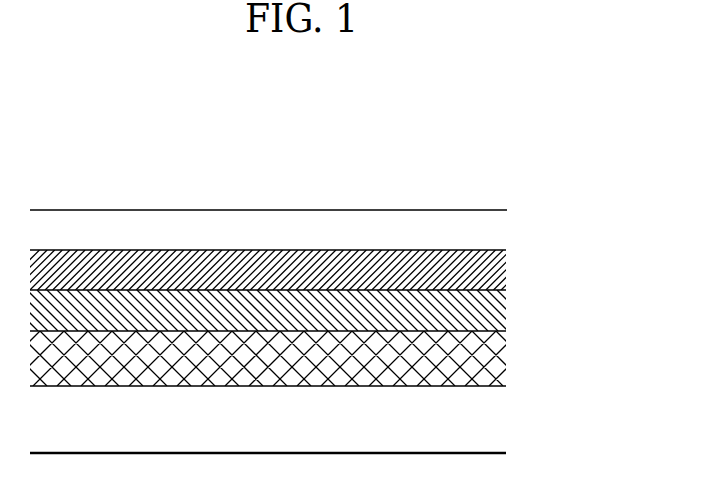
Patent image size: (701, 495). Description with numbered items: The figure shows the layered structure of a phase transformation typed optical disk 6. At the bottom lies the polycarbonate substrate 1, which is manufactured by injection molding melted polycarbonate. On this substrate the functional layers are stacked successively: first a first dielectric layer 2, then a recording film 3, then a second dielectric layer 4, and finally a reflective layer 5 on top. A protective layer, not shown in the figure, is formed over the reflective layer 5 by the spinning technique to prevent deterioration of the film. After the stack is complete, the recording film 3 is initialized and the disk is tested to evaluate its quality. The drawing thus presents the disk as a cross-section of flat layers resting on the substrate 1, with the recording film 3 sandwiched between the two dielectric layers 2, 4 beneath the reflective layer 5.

The polycarbonate substrate 1 is at (495, 433).
The first dielectric layer 2 is at (505, 360).
The recording film 3 is at (505, 310).
The second dielectric layer 4 is at (507, 268).
The reflective layer 5 is at (497, 233).
The optical disk 6 is at (434, 204).